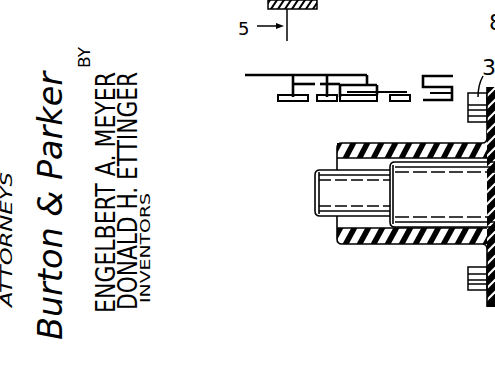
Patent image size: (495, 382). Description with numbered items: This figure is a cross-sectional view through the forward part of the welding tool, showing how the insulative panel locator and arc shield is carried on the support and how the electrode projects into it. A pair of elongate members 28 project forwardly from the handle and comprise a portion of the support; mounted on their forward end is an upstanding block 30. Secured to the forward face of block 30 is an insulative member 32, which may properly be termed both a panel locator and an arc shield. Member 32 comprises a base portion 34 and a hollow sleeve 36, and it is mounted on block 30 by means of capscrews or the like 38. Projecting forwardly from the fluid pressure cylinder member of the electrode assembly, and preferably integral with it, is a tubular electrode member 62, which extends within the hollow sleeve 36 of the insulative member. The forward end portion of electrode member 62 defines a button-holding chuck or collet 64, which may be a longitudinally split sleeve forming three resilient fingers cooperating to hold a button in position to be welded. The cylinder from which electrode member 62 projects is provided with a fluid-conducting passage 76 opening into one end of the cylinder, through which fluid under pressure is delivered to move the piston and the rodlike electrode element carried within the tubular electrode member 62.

The insulative member 32 is at (412, 206).
The base portion 34 is at (490, 304).
The hollow sleeve 36 is at (380, 234).
The capscrews 38 is at (472, 279).
The tubular electrode member 62 is at (458, 200).
The button-holding chuck 64 is at (328, 183).
The upstanding block 30 is at (307, 10).
The fluid-conducting passage 76 is at (387, 0).
The elongate members 28 is at (443, 0).